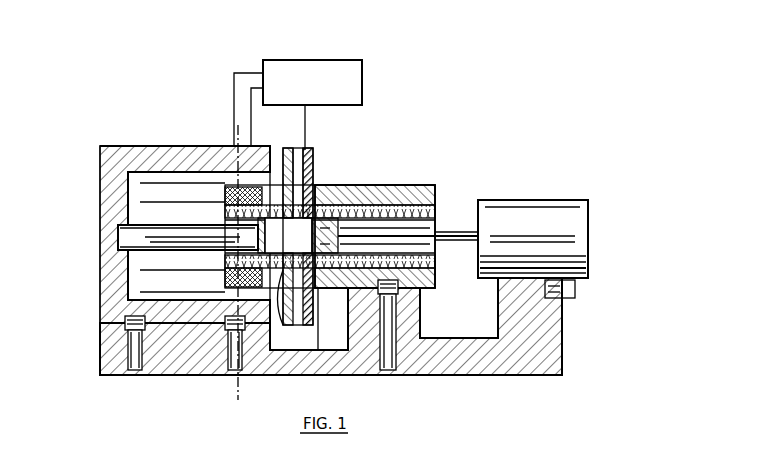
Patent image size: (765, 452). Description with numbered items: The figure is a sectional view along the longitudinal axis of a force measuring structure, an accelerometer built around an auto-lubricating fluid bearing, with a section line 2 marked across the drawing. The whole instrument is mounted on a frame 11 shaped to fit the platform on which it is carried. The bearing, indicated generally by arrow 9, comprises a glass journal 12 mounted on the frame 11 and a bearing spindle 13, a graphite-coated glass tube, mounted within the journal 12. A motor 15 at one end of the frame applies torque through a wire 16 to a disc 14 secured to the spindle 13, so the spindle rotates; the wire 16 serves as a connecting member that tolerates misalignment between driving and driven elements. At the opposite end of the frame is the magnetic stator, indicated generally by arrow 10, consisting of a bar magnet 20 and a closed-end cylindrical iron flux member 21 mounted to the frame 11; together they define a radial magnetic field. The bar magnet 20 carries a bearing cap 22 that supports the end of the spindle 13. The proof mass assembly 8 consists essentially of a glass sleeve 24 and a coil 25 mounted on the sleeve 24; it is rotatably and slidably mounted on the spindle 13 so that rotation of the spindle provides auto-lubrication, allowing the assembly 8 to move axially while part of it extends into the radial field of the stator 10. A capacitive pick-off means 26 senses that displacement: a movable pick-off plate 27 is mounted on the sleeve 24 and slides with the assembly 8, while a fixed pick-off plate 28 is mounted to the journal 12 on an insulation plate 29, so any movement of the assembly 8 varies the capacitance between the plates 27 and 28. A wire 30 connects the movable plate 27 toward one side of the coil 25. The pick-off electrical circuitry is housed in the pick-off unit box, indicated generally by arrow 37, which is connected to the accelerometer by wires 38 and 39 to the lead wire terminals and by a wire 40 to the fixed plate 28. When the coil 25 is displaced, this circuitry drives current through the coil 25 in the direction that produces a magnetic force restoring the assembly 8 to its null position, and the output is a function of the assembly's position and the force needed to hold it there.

The section line 2- 2 is at (252, 137).
The proof mass assembly 8 is at (214, 276).
The bearing 9 is at (405, 173).
The magnetic stator 10 is at (141, 131).
The frame 11 is at (425, 365).
The journal 12 is at (437, 283).
The bearing spindle 13 is at (438, 200).
The disc 14 is at (338, 288).
The motor 15 is at (525, 212).
The wire 16 is at (456, 232).
The bar magnet 20 is at (186, 235).
The cylindrical iron flux member 21 is at (102, 268).
The bearing cap 22 is at (303, 244).
The sleeve 24 is at (279, 300).
The coil 25 is at (225, 192).
The capacitive pick-off means 26 is at (315, 142).
The movable pick-off plate 27 is at (287, 150).
The fixed pick-off plate 28 is at (297, 148).
The insulation plate 29 is at (314, 160).
The wire 30 is at (303, 165).
The pick-off unit box 37 is at (345, 56).
The wire 38 is at (250, 117).
The wire 39 is at (233, 97).
The wire 40 is at (306, 125).